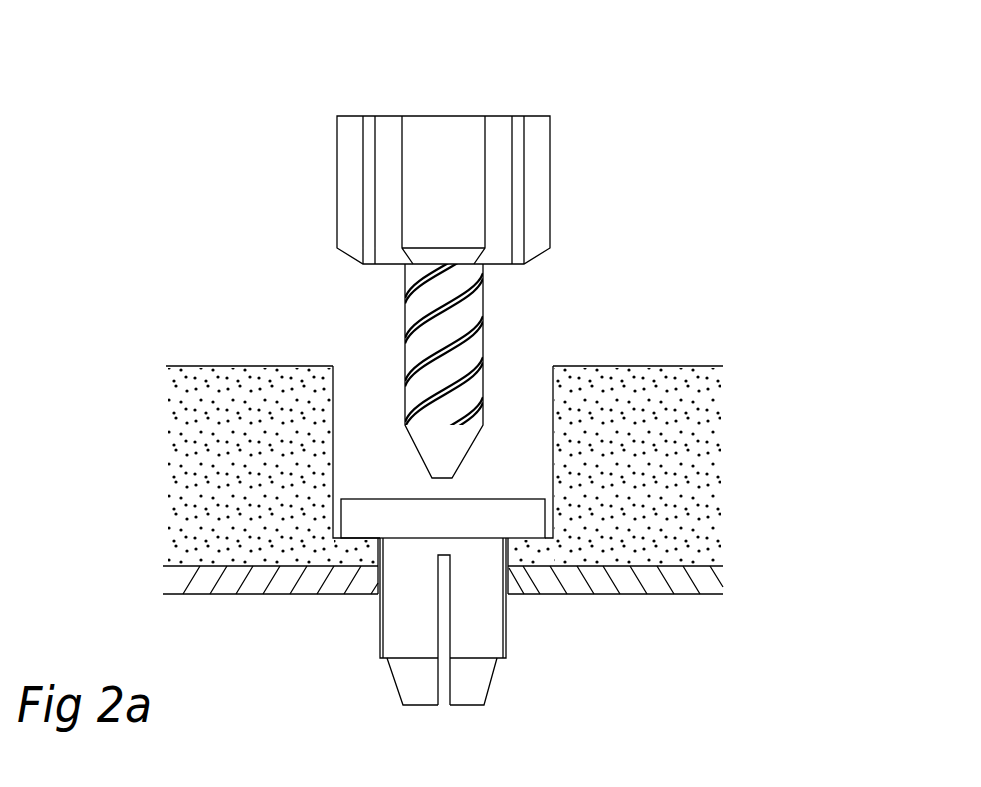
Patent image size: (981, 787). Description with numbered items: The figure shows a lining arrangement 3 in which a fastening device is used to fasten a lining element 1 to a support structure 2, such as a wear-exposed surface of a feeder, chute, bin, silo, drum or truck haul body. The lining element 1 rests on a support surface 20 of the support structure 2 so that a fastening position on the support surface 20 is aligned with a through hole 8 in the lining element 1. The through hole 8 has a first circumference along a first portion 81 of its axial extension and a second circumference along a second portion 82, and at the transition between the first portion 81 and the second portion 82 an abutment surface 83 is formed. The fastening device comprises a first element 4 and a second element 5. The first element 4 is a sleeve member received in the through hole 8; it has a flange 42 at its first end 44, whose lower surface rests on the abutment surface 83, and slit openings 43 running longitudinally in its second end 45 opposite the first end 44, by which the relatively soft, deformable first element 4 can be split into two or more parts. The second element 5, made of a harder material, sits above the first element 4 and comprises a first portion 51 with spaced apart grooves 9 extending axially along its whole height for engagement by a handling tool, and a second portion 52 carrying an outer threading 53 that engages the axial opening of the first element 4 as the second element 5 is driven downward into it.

The lining element 1 is at (200, 487).
The support structure 2 is at (198, 581).
The lining arrangement 3 is at (741, 133).
The first element 4 is at (484, 591).
The second element 5 is at (425, 240).
The through hole 8 is at (512, 398).
The grooves 9 is at (496, 138).
The support surface 20 is at (604, 566).
The flange 42 is at (525, 523).
The slit openings 43 is at (444, 668).
The first end 44 is at (390, 498).
The second end 45 is at (472, 706).
The first portion 51 is at (348, 173).
The second portion 52 is at (415, 302).
The outer threading 53 is at (405, 347).
The first portion 81 is at (333, 462).
The second portion 82 is at (378, 540).
The abutment surface 83 is at (360, 540).